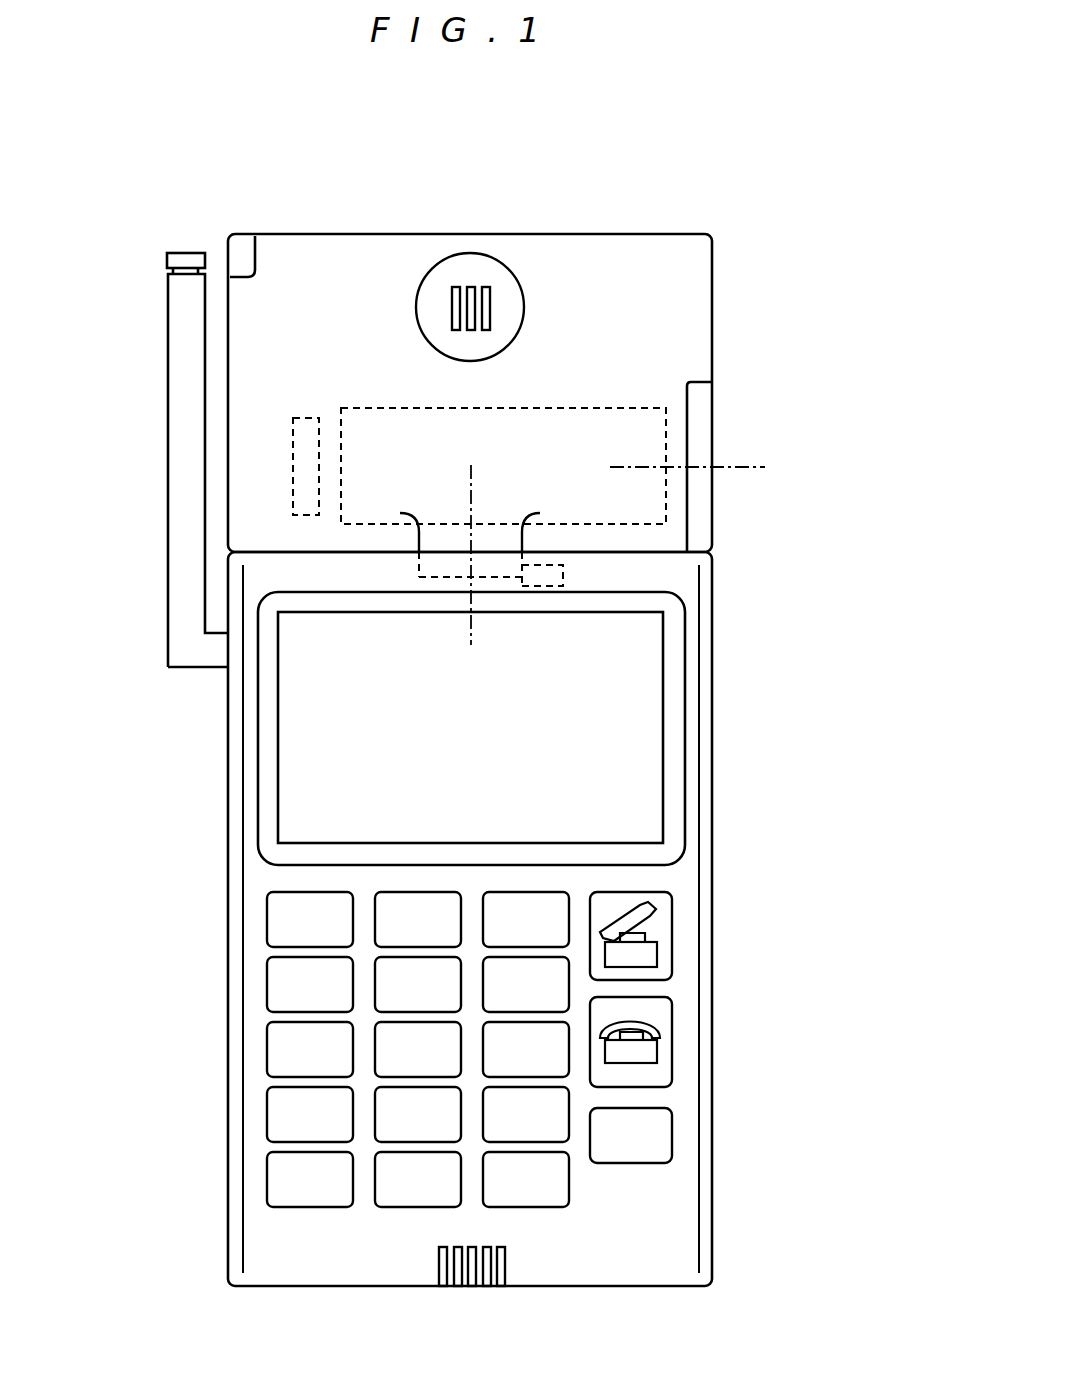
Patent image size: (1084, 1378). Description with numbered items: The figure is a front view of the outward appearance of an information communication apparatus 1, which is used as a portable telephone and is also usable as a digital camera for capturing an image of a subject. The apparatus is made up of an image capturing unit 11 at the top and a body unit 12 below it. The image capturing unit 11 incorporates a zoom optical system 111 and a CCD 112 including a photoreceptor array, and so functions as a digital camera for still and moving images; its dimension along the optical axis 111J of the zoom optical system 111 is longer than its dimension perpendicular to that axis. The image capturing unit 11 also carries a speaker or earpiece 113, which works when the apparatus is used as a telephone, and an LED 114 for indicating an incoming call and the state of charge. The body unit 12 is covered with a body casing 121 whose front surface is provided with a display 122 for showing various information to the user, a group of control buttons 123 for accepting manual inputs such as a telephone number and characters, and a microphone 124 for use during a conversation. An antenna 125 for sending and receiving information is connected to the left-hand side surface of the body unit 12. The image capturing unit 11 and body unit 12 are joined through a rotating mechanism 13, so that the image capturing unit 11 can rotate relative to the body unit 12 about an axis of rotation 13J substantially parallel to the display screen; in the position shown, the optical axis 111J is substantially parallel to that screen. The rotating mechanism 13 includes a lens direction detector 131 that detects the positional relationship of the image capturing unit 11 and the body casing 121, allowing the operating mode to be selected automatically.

The information communication apparatus 1 is at (110, 225).
The image capturing unit 11 is at (772, 393).
The body unit 12 is at (768, 933).
The rotating mechanism 13 is at (482, 578).
The axis of rotation 13J is at (477, 497).
The zoom optical system 111 is at (667, 492).
The optical axis 111J is at (735, 465).
The CCD 112 is at (293, 438).
The speaker or earpiece 113 is at (483, 289).
The LED 114 is at (243, 233).
The body casing 121 is at (713, 858).
The display 122 is at (278, 755).
The group of control buttons 123 is at (262, 961).
The microphone 124 is at (487, 1287).
The antenna 125 is at (168, 578).
The lens direction detector 131 is at (565, 578).